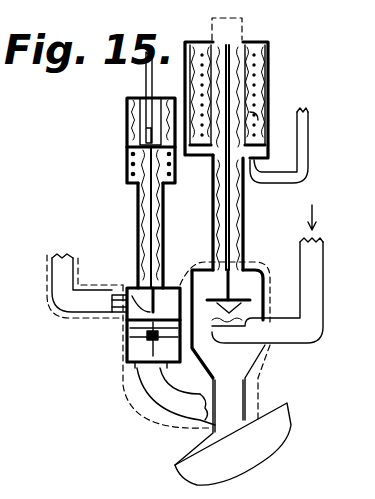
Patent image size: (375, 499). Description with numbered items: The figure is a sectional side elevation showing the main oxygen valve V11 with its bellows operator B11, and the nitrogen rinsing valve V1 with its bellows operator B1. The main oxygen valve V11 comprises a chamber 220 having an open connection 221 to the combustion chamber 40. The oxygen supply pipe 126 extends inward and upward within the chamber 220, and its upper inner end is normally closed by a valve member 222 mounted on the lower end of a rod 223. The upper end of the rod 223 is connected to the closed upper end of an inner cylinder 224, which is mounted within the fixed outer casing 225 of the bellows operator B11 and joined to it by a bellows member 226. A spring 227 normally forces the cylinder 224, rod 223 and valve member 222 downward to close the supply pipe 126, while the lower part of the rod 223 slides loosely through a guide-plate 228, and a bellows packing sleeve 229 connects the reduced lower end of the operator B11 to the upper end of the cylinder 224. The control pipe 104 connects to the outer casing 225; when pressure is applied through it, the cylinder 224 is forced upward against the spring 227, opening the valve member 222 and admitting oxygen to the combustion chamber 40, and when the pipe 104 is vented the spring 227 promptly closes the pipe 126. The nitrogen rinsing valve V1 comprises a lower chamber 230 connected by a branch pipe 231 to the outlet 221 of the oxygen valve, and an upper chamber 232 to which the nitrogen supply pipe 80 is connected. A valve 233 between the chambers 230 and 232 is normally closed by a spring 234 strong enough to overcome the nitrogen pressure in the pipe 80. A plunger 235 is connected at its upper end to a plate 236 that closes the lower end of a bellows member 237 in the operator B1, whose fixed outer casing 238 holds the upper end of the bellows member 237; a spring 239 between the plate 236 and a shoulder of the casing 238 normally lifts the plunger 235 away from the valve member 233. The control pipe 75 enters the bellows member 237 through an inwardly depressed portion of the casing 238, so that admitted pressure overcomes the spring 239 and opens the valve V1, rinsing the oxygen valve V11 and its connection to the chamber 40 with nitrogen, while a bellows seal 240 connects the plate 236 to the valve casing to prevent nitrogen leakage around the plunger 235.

The combustion chamber 40 is at (182, 464).
The pressure or control pipe 75 is at (152, 73).
The nitrogen supply pipe 80 is at (60, 280).
The control pipe 104 is at (303, 145).
The oxygen supply pipe 126 is at (314, 288).
The chamber 220 is at (250, 308).
The open connection 221 is at (247, 400).
The valve member 222 is at (250, 276).
The rod 223 is at (226, 287).
The inner cylinder 224 is at (244, 46).
The fixed outer casing 225 is at (266, 50).
The bellows member 226 is at (252, 98).
The spring 227 is at (258, 118).
The guide-plate 228 is at (244, 270).
The bellows packing sleeve 229 is at (240, 200).
The lower chamber 230 is at (130, 370).
The branch pipe 231 is at (160, 422).
The upper chamber 232 is at (125, 290).
The valve 233 is at (126, 318).
The spring 234 is at (188, 362).
The plunger 235 is at (156, 301).
The plate 236 is at (126, 151).
The bellows member 237 is at (131, 117).
The fixed outer casing 238 is at (122, 215).
The spring 239 is at (170, 172).
The bellows seal 240 is at (160, 208).
The bellows operator B1 is at (128, 143).
The bellows operator B11 is at (266, 78).
The nitrogen rinsing valve V1 is at (127, 355).
The main oxygen valve V11 is at (268, 358).